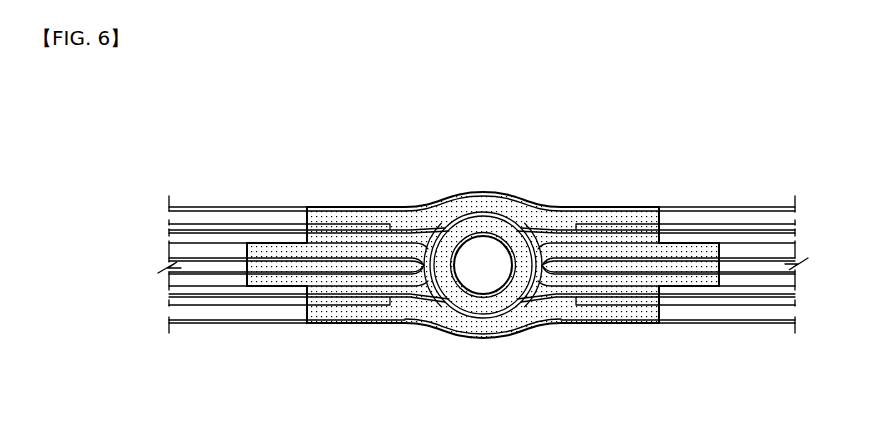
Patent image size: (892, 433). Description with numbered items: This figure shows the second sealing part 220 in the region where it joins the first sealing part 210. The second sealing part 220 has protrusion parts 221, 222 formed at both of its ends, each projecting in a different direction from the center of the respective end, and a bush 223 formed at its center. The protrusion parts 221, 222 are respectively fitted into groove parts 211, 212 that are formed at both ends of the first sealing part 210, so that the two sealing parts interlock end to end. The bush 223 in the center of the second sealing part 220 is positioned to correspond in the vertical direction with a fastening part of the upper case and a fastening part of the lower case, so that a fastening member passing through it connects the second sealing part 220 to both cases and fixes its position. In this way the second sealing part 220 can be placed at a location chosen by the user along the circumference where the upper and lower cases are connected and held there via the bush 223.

The first sealing part 210 is at (483, 261).
The groove part 211 is at (283, 310).
The groove part 212 is at (687, 297).
The second sealing part 220 is at (483, 251).
The protrusion part 221 is at (270, 263).
The protrusion part 222 is at (695, 263).
The bush 223 is at (482, 278).